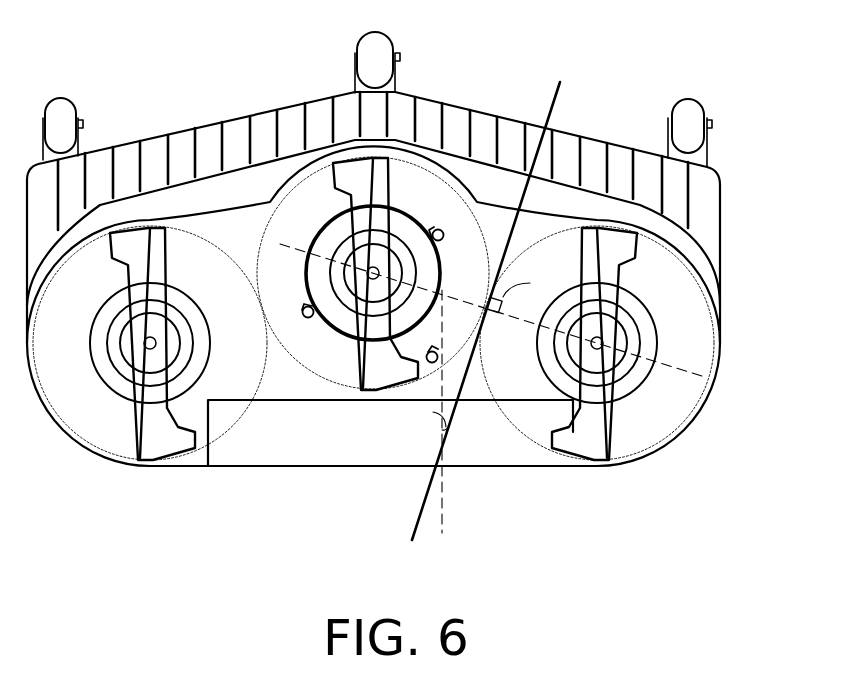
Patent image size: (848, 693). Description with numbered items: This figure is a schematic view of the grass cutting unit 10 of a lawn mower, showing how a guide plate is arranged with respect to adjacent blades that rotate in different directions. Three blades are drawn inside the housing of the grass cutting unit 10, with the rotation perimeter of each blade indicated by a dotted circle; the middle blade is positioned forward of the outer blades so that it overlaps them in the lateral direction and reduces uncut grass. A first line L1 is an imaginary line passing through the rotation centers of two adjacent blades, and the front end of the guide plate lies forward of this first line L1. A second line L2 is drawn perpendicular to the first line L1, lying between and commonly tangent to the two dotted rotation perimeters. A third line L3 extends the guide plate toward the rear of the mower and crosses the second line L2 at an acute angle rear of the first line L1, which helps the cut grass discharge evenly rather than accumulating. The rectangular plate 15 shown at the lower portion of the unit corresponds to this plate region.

The grass cutting unit 10 is at (717, 67).
The rear plate 15 is at (301, 450).
The first line L1 is at (705, 372).
The second line L2 is at (555, 94).
The third line L3 is at (442, 510).